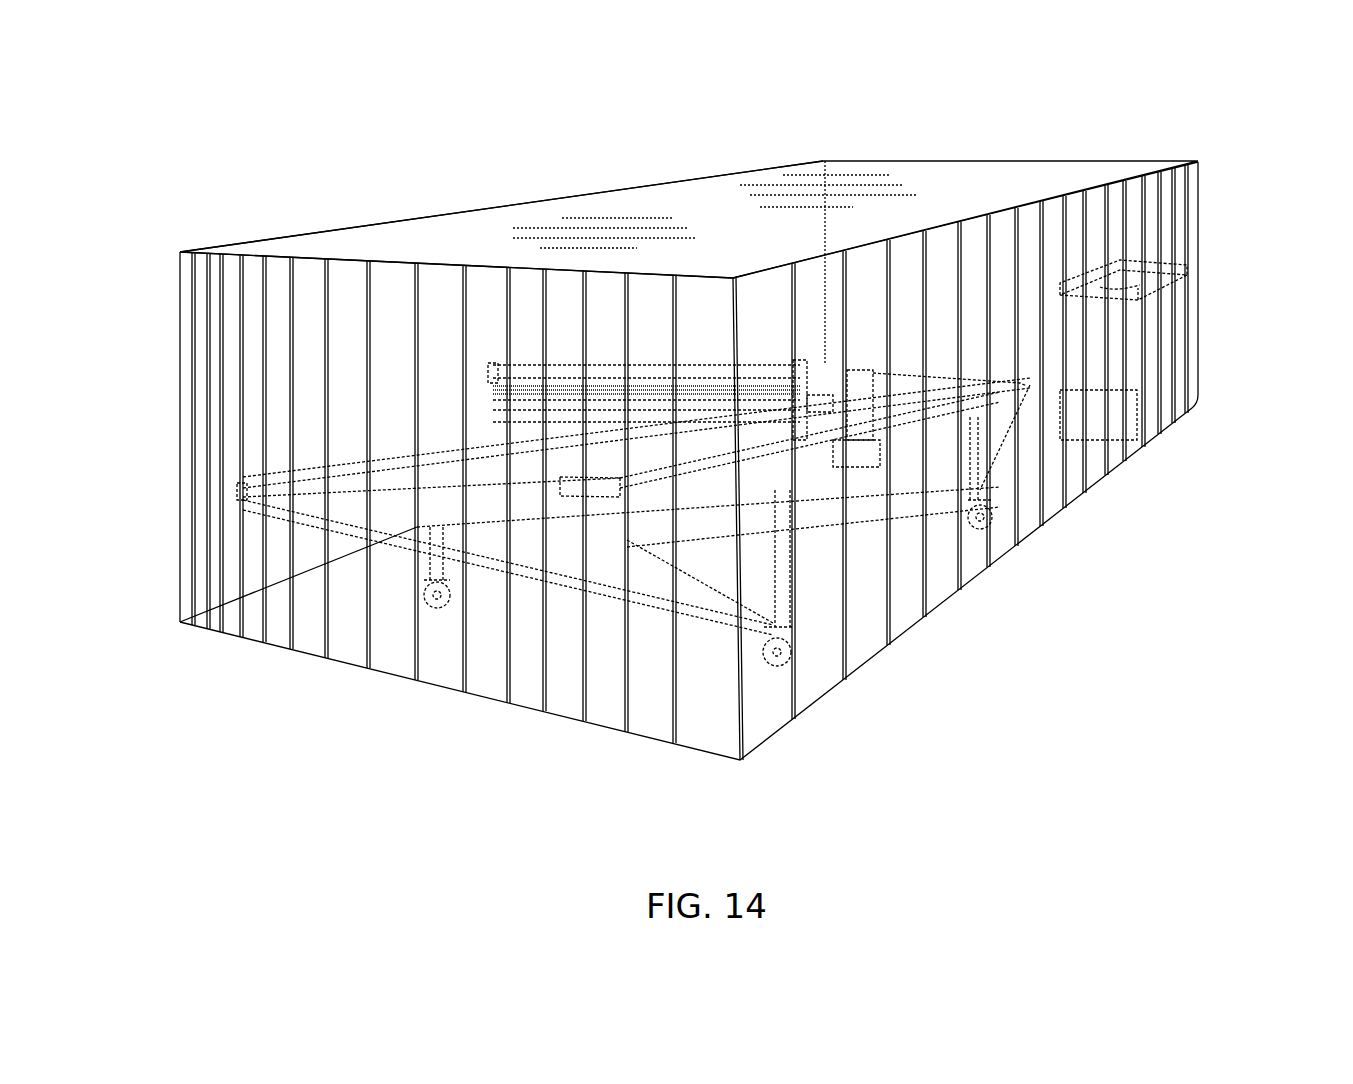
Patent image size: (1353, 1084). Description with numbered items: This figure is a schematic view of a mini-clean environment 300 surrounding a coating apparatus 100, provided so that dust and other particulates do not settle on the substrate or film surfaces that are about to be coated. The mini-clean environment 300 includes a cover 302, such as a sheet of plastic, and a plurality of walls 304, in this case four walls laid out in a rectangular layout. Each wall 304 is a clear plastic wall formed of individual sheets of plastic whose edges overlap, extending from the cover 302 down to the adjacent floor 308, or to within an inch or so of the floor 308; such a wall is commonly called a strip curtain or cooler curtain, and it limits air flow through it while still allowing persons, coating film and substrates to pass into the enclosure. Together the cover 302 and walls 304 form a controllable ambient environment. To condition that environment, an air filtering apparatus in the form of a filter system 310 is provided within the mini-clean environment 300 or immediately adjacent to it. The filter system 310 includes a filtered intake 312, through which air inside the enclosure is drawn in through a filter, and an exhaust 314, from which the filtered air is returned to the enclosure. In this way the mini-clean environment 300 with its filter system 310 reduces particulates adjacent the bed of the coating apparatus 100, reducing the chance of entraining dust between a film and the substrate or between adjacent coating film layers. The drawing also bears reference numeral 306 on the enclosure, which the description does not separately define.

The coating apparatus 100 is at (565, 528).
The mini-clean environment 300 is at (1216, 222).
The cover 302 is at (437, 233).
The walls 304 is at (232, 372).
The side wall 306 is at (1075, 472).
The floor 308 is at (990, 684).
The filter system 310 is at (1165, 310).
The filtered intake 312 is at (1115, 427).
The exhaust 314 is at (1140, 280).